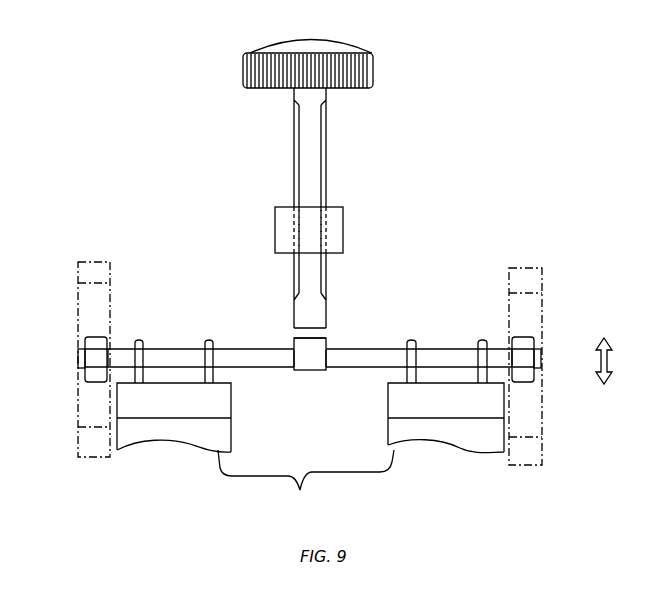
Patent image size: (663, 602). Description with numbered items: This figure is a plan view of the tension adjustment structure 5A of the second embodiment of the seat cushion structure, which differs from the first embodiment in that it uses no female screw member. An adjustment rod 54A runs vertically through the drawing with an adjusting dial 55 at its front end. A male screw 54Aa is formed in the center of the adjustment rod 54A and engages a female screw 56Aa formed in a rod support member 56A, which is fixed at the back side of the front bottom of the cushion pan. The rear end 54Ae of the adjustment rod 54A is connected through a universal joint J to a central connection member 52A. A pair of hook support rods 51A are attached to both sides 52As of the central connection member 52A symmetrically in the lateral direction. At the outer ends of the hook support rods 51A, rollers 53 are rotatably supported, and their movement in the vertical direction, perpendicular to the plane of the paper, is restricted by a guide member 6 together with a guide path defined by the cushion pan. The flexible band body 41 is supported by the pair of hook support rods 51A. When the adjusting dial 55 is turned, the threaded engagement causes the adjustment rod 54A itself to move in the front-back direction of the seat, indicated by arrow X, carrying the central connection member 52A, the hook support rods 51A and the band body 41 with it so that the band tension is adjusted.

The adjusting dial 55 is at (376, 56).
The adjustment rod 54A is at (322, 100).
The male screw 54Aa is at (298, 160).
The rear end of adjustment rod 54Ae is at (327, 308).
The rod support member 56A is at (343, 235).
The female screw 56Aa is at (320, 232).
The universal joint J is at (293, 336).
The central connection member 52A is at (311, 371).
The both sides of central connection member 52As is at (296, 353).
The hook support rod 51A is at (244, 349).
The roller 53 is at (92, 373).
The guide member 6 is at (78, 295).
The band body 41 is at (310, 451).
The tension adjustment structure 5A is at (472, 138).
The arrow X direction X is at (614, 361).